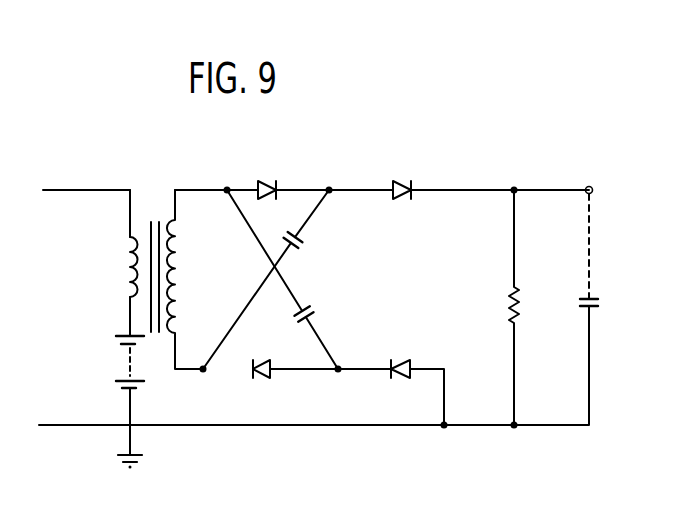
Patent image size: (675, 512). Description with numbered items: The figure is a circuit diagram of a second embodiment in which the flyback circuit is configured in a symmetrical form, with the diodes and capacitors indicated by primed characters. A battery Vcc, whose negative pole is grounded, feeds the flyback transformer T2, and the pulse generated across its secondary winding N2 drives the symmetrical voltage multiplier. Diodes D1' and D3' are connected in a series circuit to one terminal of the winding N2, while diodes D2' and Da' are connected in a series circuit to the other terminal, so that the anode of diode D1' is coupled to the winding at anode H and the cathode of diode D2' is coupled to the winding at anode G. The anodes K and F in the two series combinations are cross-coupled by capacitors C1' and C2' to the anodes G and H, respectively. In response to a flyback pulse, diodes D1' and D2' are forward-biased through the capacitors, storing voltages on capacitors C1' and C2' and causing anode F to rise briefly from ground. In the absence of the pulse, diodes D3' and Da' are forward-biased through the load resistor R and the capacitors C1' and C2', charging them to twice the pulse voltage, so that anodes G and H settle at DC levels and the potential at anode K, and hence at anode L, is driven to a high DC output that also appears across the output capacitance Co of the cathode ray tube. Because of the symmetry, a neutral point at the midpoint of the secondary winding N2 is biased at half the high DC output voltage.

The flyback transformer T2 is at (154, 212).
The secondary winding N2 is at (176, 284).
The battery Vcc is at (118, 344).
The anode H is at (224, 186).
The anode K is at (331, 186).
The anode G is at (203, 373).
The anode F is at (338, 374).
The anode L is at (509, 186).
The diode D1' is at (276, 171).
The diode D2' is at (262, 353).
The diode D3' is at (423, 175).
The diode Da' is at (415, 353).
The capacitor C1' is at (315, 252).
The capacitor C2' is at (328, 316).
The capacitance Co is at (592, 309).
The load resistor R is at (515, 308).